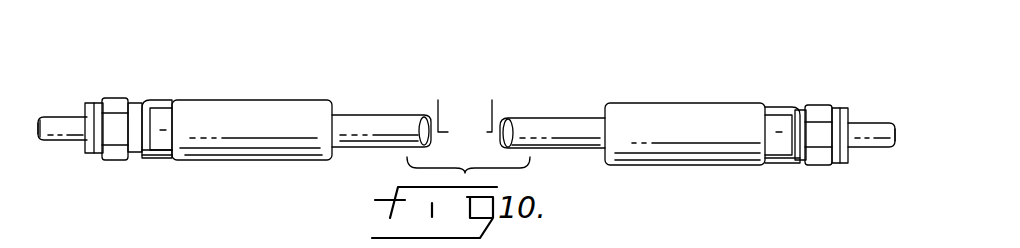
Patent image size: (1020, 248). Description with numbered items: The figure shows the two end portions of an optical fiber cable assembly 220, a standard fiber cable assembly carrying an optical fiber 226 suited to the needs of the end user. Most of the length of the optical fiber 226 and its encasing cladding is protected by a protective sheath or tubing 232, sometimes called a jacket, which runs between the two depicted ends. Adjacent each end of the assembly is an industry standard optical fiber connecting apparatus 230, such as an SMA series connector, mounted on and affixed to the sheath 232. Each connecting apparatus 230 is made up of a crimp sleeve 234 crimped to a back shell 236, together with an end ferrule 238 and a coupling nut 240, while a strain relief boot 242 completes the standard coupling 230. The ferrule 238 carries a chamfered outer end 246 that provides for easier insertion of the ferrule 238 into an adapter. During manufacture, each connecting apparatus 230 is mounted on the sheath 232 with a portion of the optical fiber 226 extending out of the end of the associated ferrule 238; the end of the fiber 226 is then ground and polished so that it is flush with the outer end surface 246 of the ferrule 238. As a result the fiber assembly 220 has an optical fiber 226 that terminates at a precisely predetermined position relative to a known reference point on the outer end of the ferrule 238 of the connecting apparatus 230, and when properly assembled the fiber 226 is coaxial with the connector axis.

The optical fiber cable assembly 220 is at (437, 82).
The optical fiber 226 is at (492, 101).
The optical fiber connecting apparatus 230 is at (241, 97).
The protective sheath 232 is at (409, 115).
The crimp sleeve 234 is at (157, 108).
The back shell 236 is at (147, 107).
The end ferrule 238 is at (72, 140).
The coupling nut 240 is at (118, 153).
The strain relief boot 242 is at (142, 154).
The chamfered outer end 246 is at (40, 117).